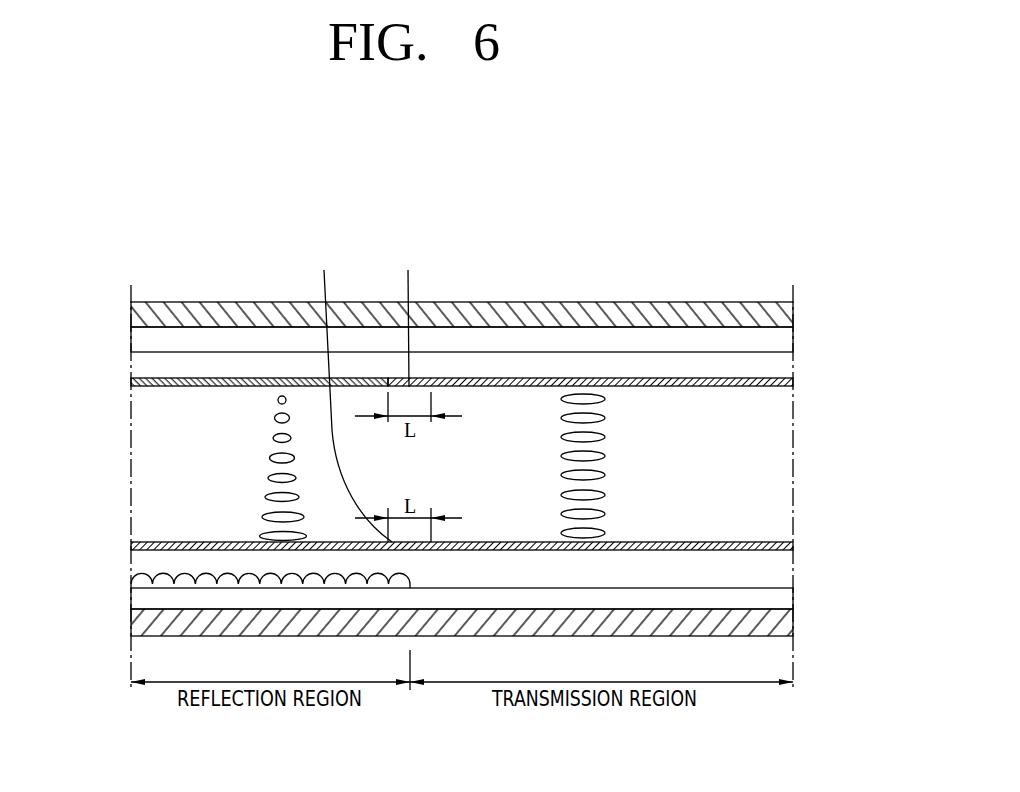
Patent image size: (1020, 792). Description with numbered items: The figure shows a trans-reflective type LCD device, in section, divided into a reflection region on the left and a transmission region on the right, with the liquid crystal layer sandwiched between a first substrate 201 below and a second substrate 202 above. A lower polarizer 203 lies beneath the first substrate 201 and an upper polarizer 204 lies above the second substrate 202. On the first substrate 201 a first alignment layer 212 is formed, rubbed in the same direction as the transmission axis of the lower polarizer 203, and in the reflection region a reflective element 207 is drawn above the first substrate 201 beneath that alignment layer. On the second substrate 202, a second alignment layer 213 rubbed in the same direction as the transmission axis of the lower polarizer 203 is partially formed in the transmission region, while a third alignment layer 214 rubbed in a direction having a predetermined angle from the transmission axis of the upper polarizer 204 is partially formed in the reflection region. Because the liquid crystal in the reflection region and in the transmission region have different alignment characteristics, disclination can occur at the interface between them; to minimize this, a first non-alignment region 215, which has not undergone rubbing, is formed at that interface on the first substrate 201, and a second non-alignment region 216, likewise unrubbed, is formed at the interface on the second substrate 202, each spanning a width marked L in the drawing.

The first substrate 201 is at (142, 599).
The second substrate 202 is at (142, 343).
The lower polarizer 203 is at (143, 625).
The upper polarizer 204 is at (138, 312).
The reflective electrode 207 is at (142, 581).
The first alignment layer 212 is at (138, 543).
The second alignment layer 213 is at (795, 380).
The third alignment layer 214 is at (131, 381).
The first non-alignment region 215 is at (352, 392).
The second non-alignment region 216 is at (407, 315).